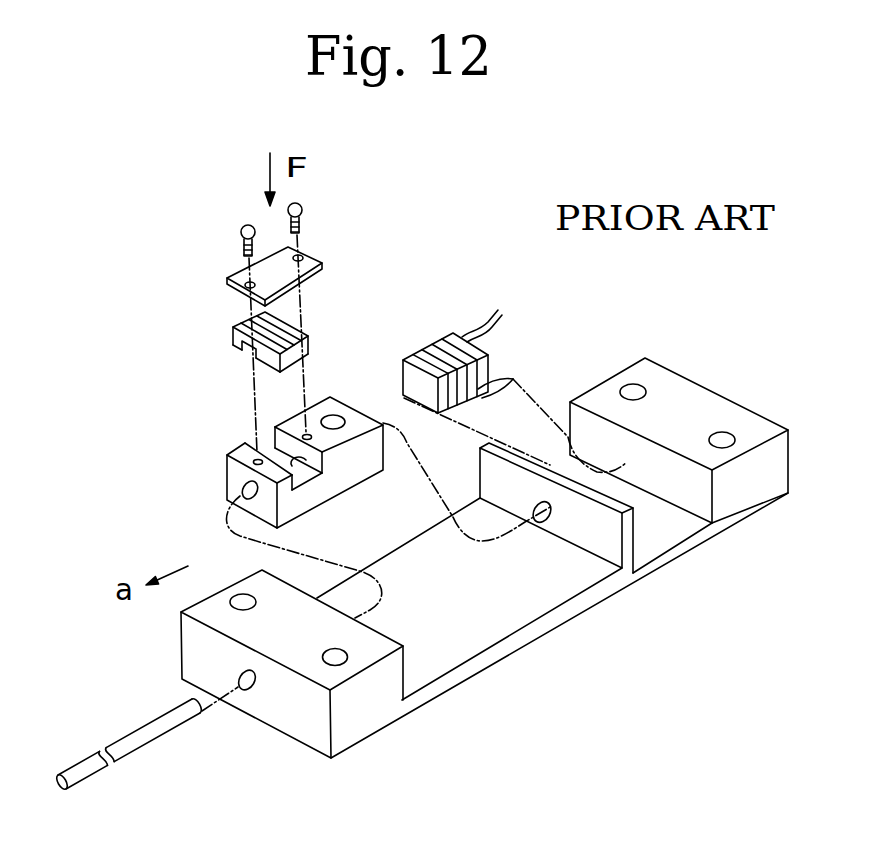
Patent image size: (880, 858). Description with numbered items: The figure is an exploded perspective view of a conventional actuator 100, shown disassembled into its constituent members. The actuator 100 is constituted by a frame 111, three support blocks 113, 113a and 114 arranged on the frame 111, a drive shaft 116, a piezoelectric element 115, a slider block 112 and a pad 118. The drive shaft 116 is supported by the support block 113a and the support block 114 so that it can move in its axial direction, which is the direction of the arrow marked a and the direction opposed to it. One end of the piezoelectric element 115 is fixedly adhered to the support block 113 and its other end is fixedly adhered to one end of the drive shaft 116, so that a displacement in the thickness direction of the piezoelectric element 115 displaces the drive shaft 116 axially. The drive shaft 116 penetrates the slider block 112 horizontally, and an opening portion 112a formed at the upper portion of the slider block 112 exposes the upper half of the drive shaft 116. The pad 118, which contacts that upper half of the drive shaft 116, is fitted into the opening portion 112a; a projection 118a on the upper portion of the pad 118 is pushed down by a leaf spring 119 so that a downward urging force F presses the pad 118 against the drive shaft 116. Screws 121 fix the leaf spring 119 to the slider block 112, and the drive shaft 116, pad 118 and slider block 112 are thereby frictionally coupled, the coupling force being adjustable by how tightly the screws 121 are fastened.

The actuator 100 is at (612, 647).
The frame 111 is at (537, 634).
The slider block 112 is at (225, 478).
The opening portion 112a is at (236, 436).
The support block 113 is at (748, 503).
The support block 113a is at (632, 553).
The support block 114 is at (370, 723).
The piezoelectric element 115 is at (445, 333).
The drive shaft 116 is at (165, 730).
The pad 118 is at (232, 338).
The projection 118a is at (245, 318).
The leaf spring 119 is at (322, 262).
The screws 121 is at (240, 233).